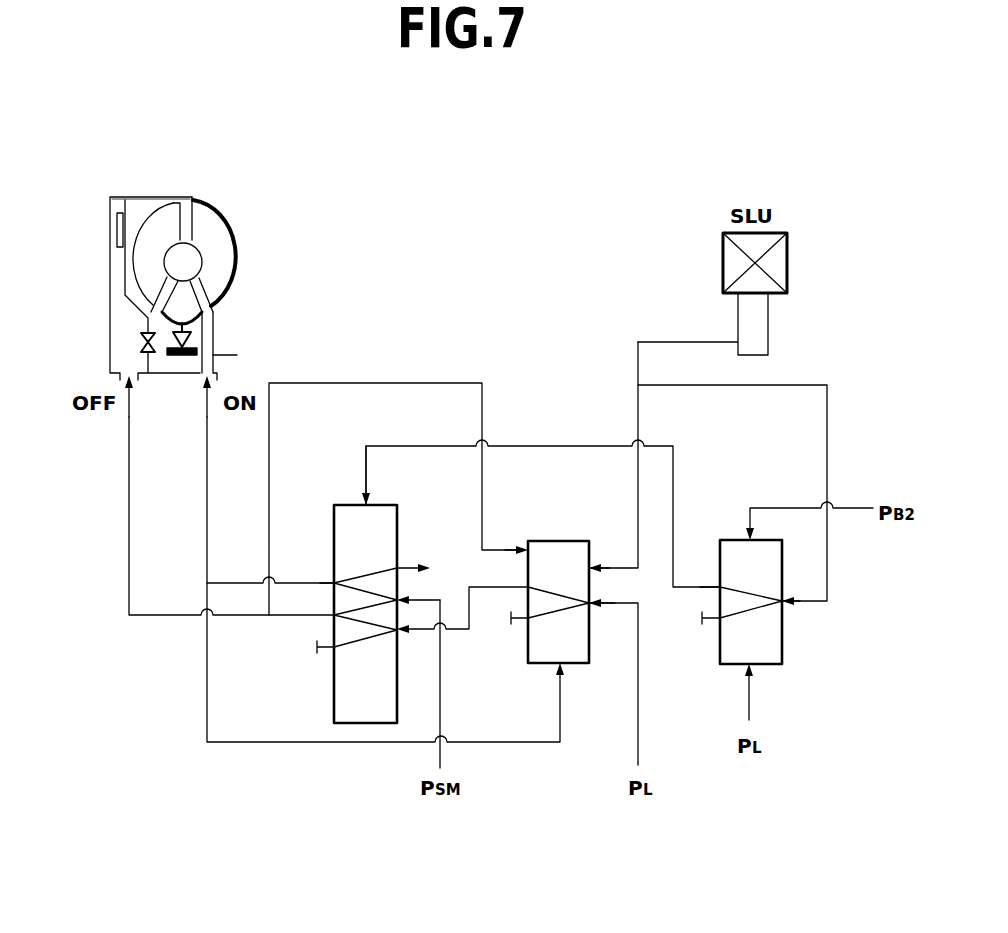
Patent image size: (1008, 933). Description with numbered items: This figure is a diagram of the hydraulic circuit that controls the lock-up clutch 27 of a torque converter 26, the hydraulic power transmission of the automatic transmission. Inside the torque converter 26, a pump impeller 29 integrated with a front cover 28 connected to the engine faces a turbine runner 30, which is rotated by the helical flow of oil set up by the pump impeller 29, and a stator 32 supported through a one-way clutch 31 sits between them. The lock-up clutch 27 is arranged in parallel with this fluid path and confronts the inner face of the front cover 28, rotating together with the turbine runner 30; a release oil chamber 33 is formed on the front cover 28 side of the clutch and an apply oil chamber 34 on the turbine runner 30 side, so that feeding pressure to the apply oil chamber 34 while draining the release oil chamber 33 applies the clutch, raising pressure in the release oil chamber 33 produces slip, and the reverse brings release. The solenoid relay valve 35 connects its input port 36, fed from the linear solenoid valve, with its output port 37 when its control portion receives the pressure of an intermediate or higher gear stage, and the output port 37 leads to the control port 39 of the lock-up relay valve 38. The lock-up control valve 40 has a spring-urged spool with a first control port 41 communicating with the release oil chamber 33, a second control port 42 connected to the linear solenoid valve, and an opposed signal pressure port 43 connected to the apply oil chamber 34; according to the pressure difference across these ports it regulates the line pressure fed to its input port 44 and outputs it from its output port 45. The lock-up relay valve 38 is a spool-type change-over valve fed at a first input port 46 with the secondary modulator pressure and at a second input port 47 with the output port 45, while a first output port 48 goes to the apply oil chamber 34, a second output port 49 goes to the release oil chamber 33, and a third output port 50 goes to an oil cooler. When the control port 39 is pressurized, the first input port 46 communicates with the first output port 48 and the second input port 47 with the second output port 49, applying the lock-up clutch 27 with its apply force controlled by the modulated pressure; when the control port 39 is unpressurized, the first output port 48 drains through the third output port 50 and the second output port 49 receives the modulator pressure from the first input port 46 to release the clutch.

The torque converter 26 is at (228, 214).
The lock-up clutch 27 is at (112, 222).
The front cover 28 is at (108, 255).
The pump impeller 29 is at (232, 237).
The turbine runner 30 is at (170, 202).
The one-way clutch 31 is at (203, 357).
The stator 32 is at (183, 302).
The release oil chamber 33 is at (120, 322).
The apply oil chamber 34 is at (150, 203).
The solenoid relay valve 35 is at (775, 607).
The input port 36 is at (783, 600).
The output port 37 is at (720, 587).
The lock-up relay valve 38 is at (395, 629).
The control port 39 is at (360, 503).
The lock-up control valve 40 is at (570, 540).
The first control port 41 is at (521, 548).
The second control port 42 is at (590, 563).
The signal pressure port 43 is at (556, 592).
The input port 44 is at (590, 605).
The output port 45 is at (527, 590).
The first input port 46 is at (407, 590).
The second input port 47 is at (462, 640).
The first output port 48 is at (334, 583).
The second output port 49 is at (334, 615).
The third output port 50 is at (398, 562).